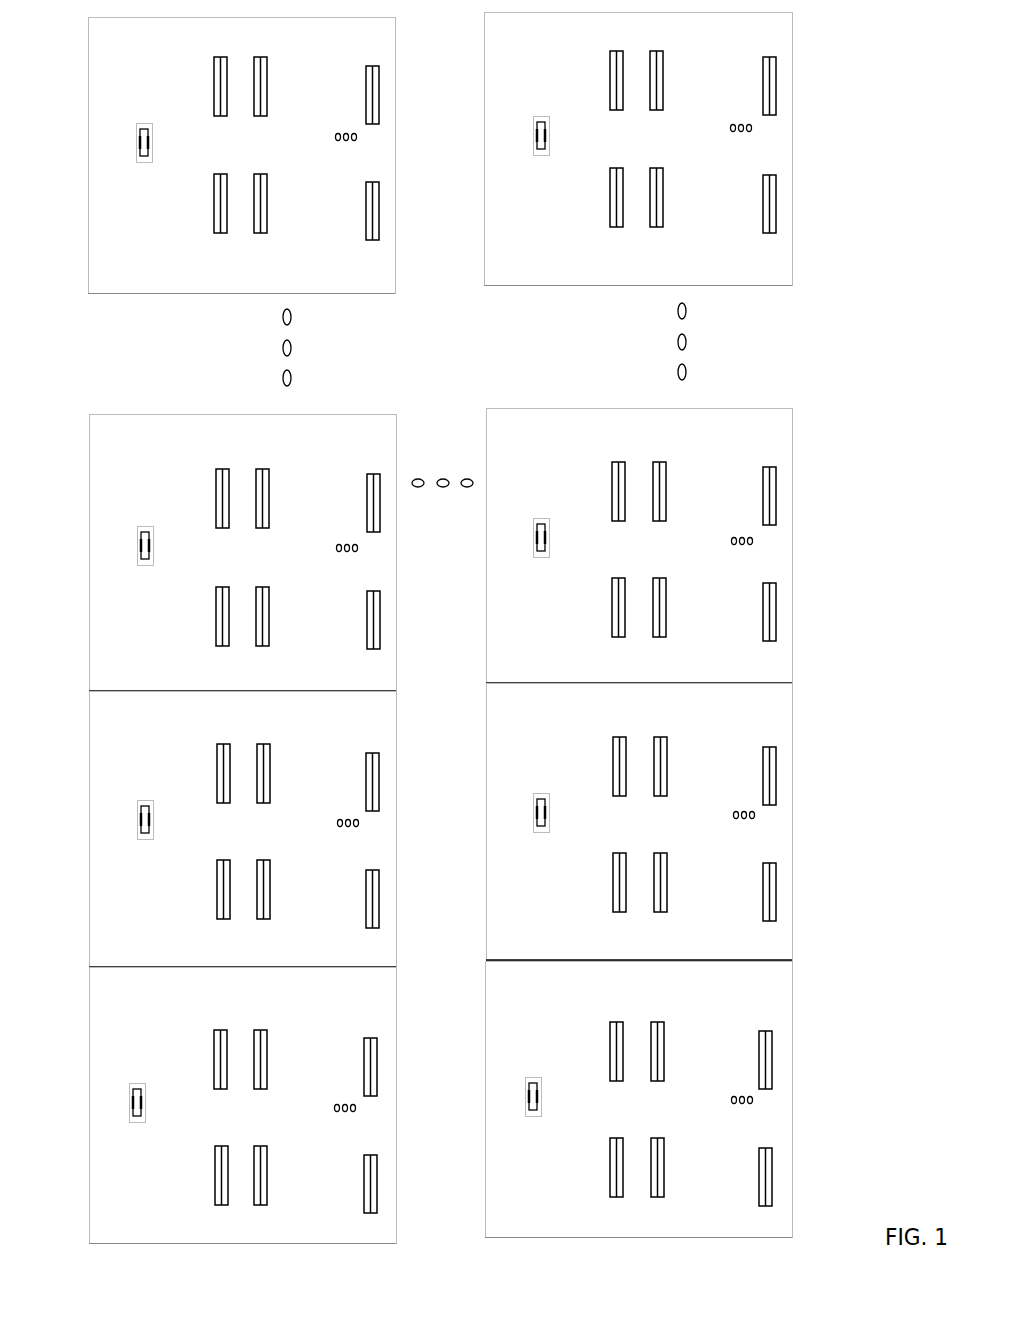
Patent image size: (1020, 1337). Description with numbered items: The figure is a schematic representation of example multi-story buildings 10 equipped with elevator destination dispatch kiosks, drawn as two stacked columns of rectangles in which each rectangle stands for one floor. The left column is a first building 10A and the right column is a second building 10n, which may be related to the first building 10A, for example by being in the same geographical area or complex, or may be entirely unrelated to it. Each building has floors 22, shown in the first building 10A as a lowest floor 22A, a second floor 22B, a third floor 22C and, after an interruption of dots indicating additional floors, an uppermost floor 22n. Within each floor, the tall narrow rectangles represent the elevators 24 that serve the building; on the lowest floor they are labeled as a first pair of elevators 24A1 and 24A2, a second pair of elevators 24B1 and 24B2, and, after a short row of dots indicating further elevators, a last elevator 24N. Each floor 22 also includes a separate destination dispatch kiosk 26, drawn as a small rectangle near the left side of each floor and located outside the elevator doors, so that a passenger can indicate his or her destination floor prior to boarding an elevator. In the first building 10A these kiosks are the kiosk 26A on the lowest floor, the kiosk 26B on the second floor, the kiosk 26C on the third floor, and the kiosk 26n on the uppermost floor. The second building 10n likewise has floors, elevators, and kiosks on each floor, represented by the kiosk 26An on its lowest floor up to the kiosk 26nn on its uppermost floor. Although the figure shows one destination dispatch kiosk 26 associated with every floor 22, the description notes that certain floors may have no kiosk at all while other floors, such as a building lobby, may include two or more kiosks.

The multi-story building 10 is at (824, 138).
The multi-story building 10A is at (41, 138).
The multi-story building 10n is at (459, 138).
The floor 22 is at (80, 493).
The floor 22A is at (80, 1048).
The floor 22B is at (86, 830).
The floor 22C is at (78, 610).
The floor 22n is at (76, 262).
The elevator 24 is at (242, 1203).
The elevator 24A1 is at (216, 1021).
The elevator 24A2 is at (220, 1143).
The elevator 24B1 is at (271, 1068).
The elevator 24B2 is at (263, 1138).
The elevator 24N is at (370, 1023).
The destination dispatch kiosk 26 is at (128, 803).
The destination dispatch kiosk 26A is at (150, 1140).
The destination dispatch kiosk 26B is at (155, 842).
The destination dispatch kiosk 26C is at (146, 567).
The destination dispatch kiosk 26n is at (155, 172).
The destination dispatch kiosk 26nn is at (552, 167).
The destination dispatch kiosk 26An is at (546, 1125).